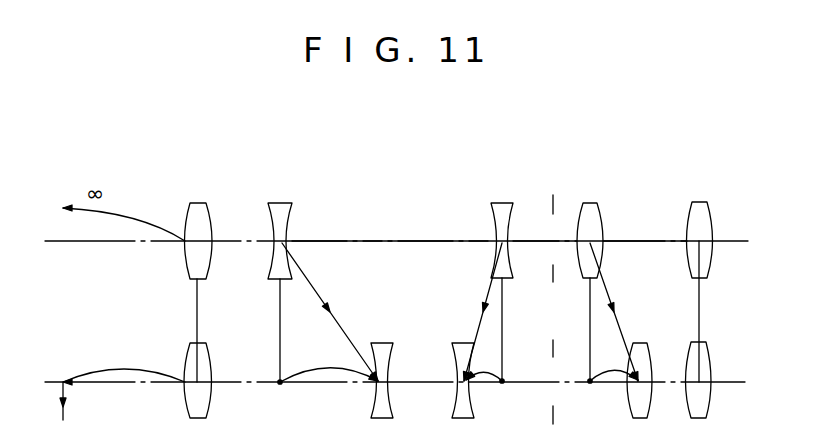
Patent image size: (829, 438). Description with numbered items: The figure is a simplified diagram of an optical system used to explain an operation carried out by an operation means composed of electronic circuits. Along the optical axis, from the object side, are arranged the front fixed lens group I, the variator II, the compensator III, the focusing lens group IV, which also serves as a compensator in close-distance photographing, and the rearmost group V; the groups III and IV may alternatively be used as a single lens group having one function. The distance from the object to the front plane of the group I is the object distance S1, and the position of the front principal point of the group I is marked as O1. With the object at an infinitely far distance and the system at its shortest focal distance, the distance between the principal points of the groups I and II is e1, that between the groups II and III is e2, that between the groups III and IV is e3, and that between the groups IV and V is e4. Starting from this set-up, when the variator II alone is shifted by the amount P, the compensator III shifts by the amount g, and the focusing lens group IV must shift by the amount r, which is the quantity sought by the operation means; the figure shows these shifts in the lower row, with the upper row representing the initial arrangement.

The front fixed lens group I is at (210, 271).
The variator II is at (330, 271).
The compensator III is at (482, 271).
The focusing lens group IV is at (614, 271).
The group V is at (699, 271).
The position of front principal point of group I O1 is at (203, 233).
The distance from object to front plane of group I S1 is at (122, 387).
The amount of shifting of group II P is at (329, 365).
The amount of shifting of group III g is at (484, 365).
The amount of shifting of group IV r is at (614, 365).
The distance between principal points of group I and group II e1 is at (396, 226).
The distance between principal points of group II and group III e2 is at (391, 226).
The distance between principal points of group III and group IV e3 is at (545, 226).
The distance between principal points of group IV and group V e4 is at (645, 226).